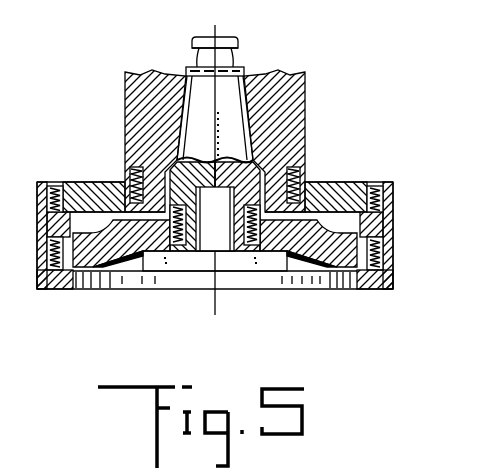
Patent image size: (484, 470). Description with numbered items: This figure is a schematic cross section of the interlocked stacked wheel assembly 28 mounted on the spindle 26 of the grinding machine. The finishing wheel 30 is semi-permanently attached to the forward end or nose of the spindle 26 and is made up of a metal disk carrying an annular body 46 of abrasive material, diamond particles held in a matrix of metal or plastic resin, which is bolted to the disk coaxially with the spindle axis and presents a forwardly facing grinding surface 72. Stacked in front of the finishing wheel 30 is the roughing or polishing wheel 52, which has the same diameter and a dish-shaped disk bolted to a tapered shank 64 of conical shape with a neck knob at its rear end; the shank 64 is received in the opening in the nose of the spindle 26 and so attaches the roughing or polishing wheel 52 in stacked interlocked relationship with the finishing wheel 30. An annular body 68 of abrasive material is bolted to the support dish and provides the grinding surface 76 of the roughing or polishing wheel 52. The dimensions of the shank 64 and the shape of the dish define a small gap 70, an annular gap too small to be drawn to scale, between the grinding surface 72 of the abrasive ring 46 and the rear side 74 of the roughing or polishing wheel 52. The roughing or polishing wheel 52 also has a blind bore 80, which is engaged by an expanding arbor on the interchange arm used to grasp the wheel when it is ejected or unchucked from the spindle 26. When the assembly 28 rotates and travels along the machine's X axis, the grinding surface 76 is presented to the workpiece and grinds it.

The spindle 26 is at (126, 101).
The tapered shank 64 is at (253, 108).
The finishing wheel 30 is at (334, 183).
The annular body of abrasive material 46 is at (393, 240).
The grinding wheel assembly 28 is at (399, 249).
The small gap 70 is at (36, 236).
The grinding surface 76 is at (53, 291).
The rear side 74 is at (93, 291).
The blind bore 80 is at (188, 291).
The roughing or polishing wheel 52 is at (267, 262).
The grinding surface 72 is at (337, 291).
The annular body of abrasive material 68 is at (385, 291).